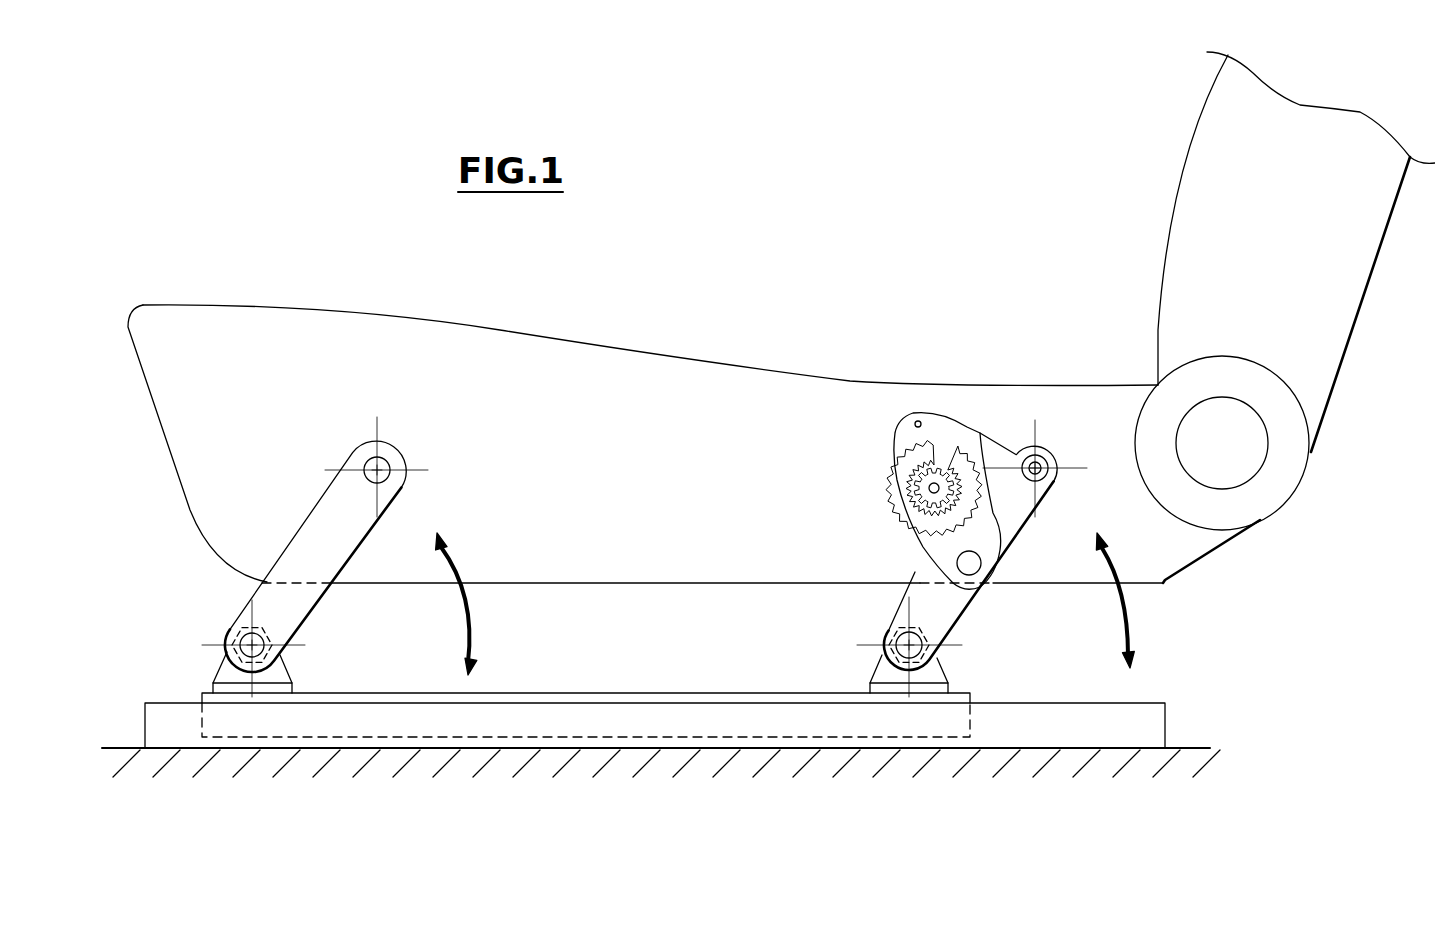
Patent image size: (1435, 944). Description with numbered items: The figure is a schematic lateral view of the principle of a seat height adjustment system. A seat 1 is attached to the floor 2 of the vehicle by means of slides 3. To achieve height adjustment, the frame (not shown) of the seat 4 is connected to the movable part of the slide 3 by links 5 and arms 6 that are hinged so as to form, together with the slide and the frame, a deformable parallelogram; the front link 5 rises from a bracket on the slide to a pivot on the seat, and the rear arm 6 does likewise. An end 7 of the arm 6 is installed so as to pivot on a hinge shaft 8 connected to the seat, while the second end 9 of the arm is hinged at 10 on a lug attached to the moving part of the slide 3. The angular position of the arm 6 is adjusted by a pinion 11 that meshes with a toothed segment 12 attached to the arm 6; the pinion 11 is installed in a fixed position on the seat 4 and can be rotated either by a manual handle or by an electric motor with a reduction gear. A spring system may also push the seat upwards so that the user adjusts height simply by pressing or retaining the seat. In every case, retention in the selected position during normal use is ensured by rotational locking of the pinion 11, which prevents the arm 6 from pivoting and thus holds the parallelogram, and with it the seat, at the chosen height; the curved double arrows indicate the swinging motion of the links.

The seat 1 is at (1062, 308).
The floor 2 is at (913, 757).
The slides 3 is at (719, 710).
The seat 4 is at (607, 383).
The links 5 is at (312, 537).
The arm 6 is at (884, 509).
The end of the arm 7 is at (1043, 450).
The hinge shaft 8 is at (1028, 460).
The second end of the arm 9 is at (893, 633).
The hinge 10 is at (912, 644).
The pinion 11 is at (932, 470).
The toothed segment 12 is at (905, 457).